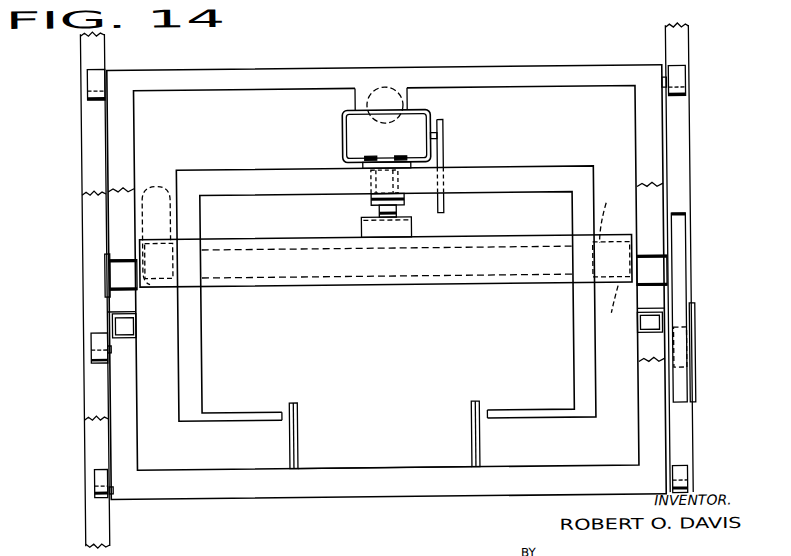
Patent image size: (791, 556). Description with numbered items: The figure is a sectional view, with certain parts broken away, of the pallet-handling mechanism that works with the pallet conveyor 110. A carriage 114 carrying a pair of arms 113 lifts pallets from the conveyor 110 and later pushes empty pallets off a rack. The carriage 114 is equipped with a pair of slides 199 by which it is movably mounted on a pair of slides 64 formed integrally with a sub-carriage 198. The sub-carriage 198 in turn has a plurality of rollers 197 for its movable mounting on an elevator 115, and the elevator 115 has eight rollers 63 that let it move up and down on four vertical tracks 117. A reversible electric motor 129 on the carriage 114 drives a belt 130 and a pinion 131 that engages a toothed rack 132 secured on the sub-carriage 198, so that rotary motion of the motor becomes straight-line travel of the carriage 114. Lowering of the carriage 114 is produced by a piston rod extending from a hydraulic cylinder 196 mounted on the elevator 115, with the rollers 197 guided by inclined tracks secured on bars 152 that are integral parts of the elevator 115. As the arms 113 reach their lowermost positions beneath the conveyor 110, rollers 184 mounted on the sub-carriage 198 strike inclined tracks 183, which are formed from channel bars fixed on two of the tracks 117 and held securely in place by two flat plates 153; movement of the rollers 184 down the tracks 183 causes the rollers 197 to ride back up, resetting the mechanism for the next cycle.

The rollers 63 is at (90, 80).
The slides 64 is at (389, 253).
The pallet conveyor 110 is at (470, 428).
The arms 113 is at (273, 419).
The carriage 114 is at (232, 169).
The elevator 115 is at (230, 47).
The vertical tracks 117 is at (684, 430).
The reversible electric motor 129 is at (344, 128).
The belt 130 is at (446, 159).
The pinion 131 is at (379, 214).
The toothed rack 132 is at (413, 233).
The bars 152 is at (124, 331).
The flat plates 153 is at (695, 336).
The inclined tracks 183 is at (681, 216).
The rollers 184 is at (657, 271).
The hydraulic cylinder 196 is at (400, 92).
The rollers 197 is at (129, 255).
The sub-carriage 198 is at (142, 287).
The slides 199 is at (392, 237).